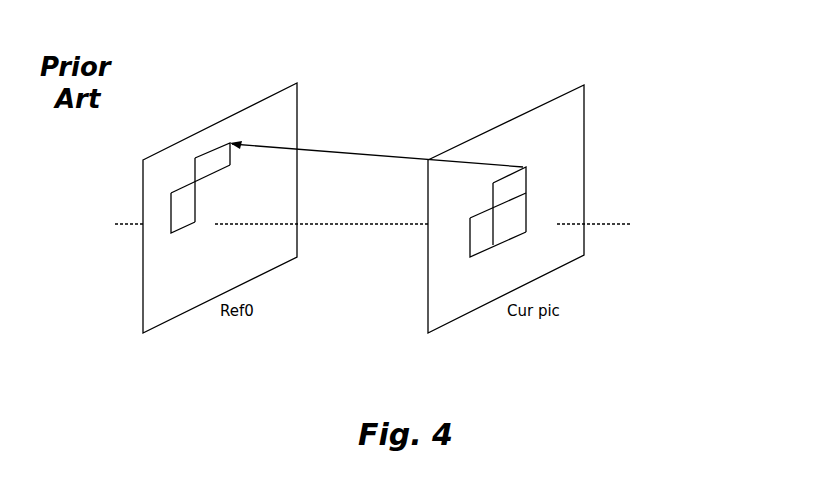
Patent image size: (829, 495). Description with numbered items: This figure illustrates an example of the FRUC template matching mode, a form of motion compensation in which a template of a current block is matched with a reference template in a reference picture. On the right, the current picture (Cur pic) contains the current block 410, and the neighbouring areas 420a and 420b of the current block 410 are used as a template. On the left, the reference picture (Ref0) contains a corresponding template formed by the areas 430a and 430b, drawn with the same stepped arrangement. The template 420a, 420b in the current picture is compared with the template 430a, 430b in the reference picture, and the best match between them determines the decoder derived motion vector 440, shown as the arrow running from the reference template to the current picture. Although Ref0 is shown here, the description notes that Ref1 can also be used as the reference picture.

The current block 410 is at (512, 219).
The neighbouring area of the current block 420a is at (510, 183).
The neighbouring area of the current block 420b is at (478, 232).
The corresponding template area in the reference picture 430a is at (212, 162).
The corresponding template area in the reference picture 430b is at (180, 210).
The decoder derived motion vector 440 is at (395, 153).